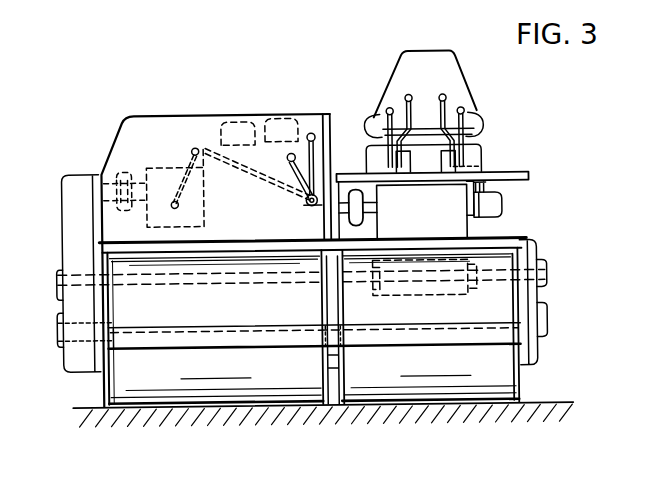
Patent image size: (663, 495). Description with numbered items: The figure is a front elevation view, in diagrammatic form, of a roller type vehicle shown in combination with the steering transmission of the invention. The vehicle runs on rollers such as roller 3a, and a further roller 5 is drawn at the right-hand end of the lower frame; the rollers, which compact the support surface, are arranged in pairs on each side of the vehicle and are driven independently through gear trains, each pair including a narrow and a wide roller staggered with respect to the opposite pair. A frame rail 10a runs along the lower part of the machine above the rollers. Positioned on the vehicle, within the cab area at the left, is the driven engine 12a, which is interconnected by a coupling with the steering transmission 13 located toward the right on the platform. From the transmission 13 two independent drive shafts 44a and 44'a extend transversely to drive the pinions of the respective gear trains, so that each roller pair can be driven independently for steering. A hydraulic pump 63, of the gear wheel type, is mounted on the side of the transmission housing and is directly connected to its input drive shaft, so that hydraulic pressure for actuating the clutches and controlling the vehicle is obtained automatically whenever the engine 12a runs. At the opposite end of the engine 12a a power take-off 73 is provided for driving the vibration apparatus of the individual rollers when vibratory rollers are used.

The roller 3a is at (265, 377).
The crawler track unit 5 is at (452, 370).
The track frame rail 10a is at (262, 337).
The engine 12a is at (264, 152).
The steering transmission 13 is at (447, 200).
The drive shaft 44a is at (490, 279).
The drive shaft 44'a is at (190, 298).
The hydraulic pump 63 is at (503, 206).
The power take-off 73 is at (150, 174).